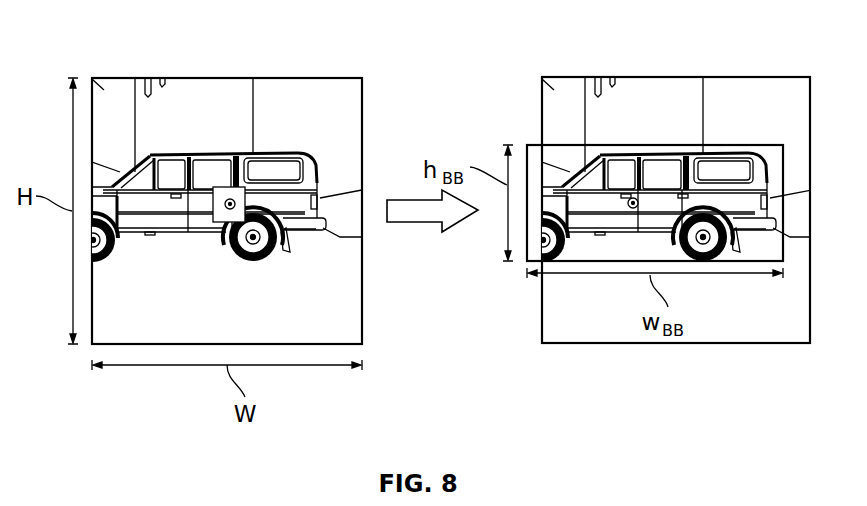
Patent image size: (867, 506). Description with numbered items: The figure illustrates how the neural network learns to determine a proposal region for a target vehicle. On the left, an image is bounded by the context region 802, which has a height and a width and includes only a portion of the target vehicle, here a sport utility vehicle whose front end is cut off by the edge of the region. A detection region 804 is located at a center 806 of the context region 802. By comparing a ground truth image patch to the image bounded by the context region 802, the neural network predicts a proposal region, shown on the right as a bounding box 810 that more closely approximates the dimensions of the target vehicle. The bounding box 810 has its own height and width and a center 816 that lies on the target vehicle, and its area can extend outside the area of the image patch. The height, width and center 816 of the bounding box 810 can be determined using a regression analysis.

The context region 802 is at (197, 78).
The detection region 804 is at (215, 186).
The center 806 is at (238, 178).
The bounding box 810 is at (743, 146).
The center 816 is at (637, 198).